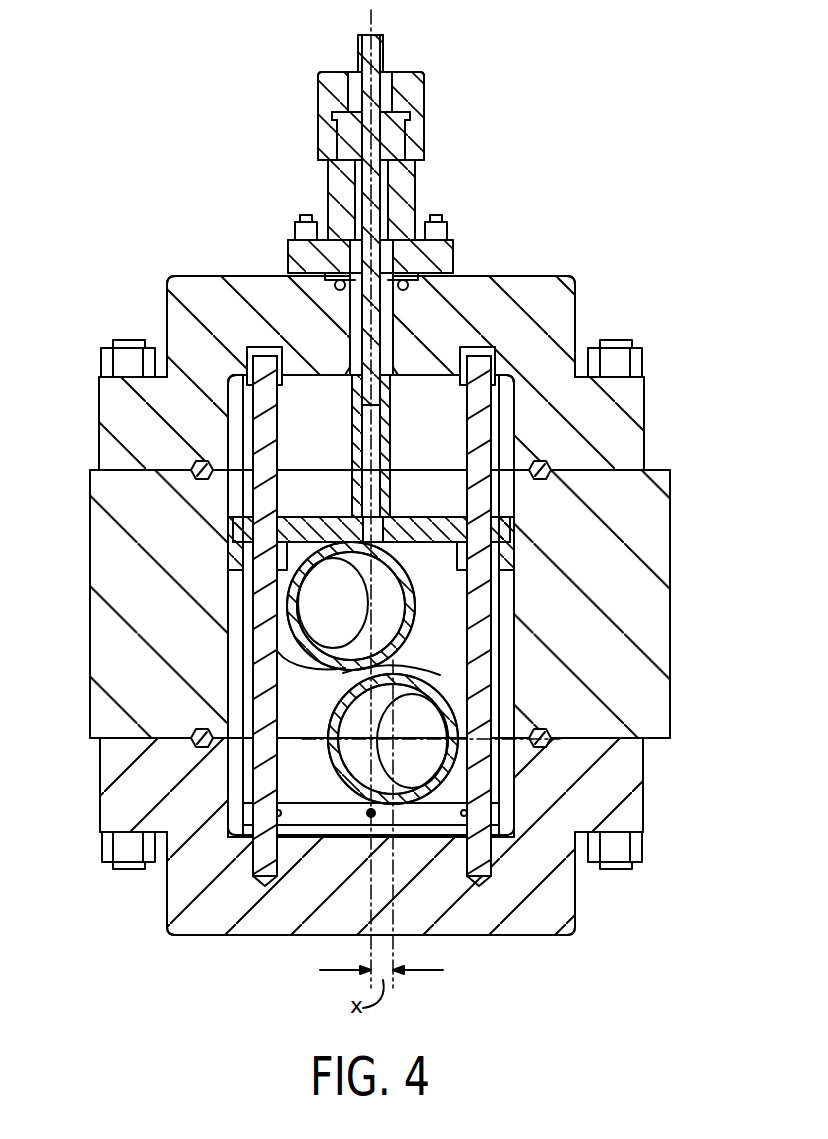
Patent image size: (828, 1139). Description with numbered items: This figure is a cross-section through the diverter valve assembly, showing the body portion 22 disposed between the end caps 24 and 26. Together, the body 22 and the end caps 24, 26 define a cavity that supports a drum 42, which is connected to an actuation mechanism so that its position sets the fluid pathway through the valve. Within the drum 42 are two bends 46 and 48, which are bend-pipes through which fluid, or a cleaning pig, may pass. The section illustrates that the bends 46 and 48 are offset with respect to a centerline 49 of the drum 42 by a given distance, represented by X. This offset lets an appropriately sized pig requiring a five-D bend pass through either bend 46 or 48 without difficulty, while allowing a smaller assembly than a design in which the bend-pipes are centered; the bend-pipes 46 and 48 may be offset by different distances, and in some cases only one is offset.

The body portion 22 is at (648, 527).
The end cap 24 is at (617, 410).
The end cap 26 is at (605, 798).
The drum 42 is at (235, 648).
The bend 46 is at (413, 612).
The bend 48 is at (440, 686).
The centerline 49 is at (371, 950).